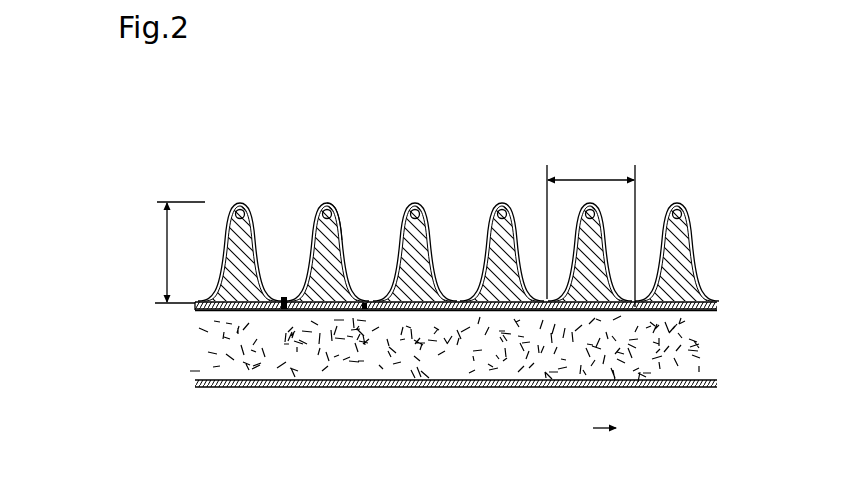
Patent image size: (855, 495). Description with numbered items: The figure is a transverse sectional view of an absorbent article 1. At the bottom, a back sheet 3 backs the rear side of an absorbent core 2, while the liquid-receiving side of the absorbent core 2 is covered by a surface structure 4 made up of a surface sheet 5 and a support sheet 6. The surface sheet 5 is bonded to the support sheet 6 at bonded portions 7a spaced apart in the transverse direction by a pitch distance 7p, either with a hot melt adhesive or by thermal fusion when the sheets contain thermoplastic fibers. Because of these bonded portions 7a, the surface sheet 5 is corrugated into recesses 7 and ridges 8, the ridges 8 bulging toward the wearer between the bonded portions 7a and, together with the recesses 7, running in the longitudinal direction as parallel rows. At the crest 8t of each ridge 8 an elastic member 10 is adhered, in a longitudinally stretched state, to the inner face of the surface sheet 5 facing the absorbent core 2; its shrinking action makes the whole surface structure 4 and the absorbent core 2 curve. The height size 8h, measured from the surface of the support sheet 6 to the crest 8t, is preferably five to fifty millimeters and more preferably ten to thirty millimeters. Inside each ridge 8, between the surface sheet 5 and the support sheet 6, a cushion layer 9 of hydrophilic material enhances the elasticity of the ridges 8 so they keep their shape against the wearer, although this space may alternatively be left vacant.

The absorbent article 1 is at (108, 287).
The absorbent core 2 is at (720, 355).
The back sheet 3 is at (718, 387).
The surface structure 4 is at (325, 147).
The surface sheet 5 is at (708, 300).
The support sheet 6 is at (717, 311).
The recess 7 is at (284, 296).
The bonded portion 7a is at (365, 305).
The pitch distance 7p is at (591, 232).
The ridge 8 is at (505, 198).
The height size 8h is at (169, 252).
The crest 8t is at (337, 206).
The cushion layer 9 is at (346, 228).
The elastic member 10 is at (322, 208).